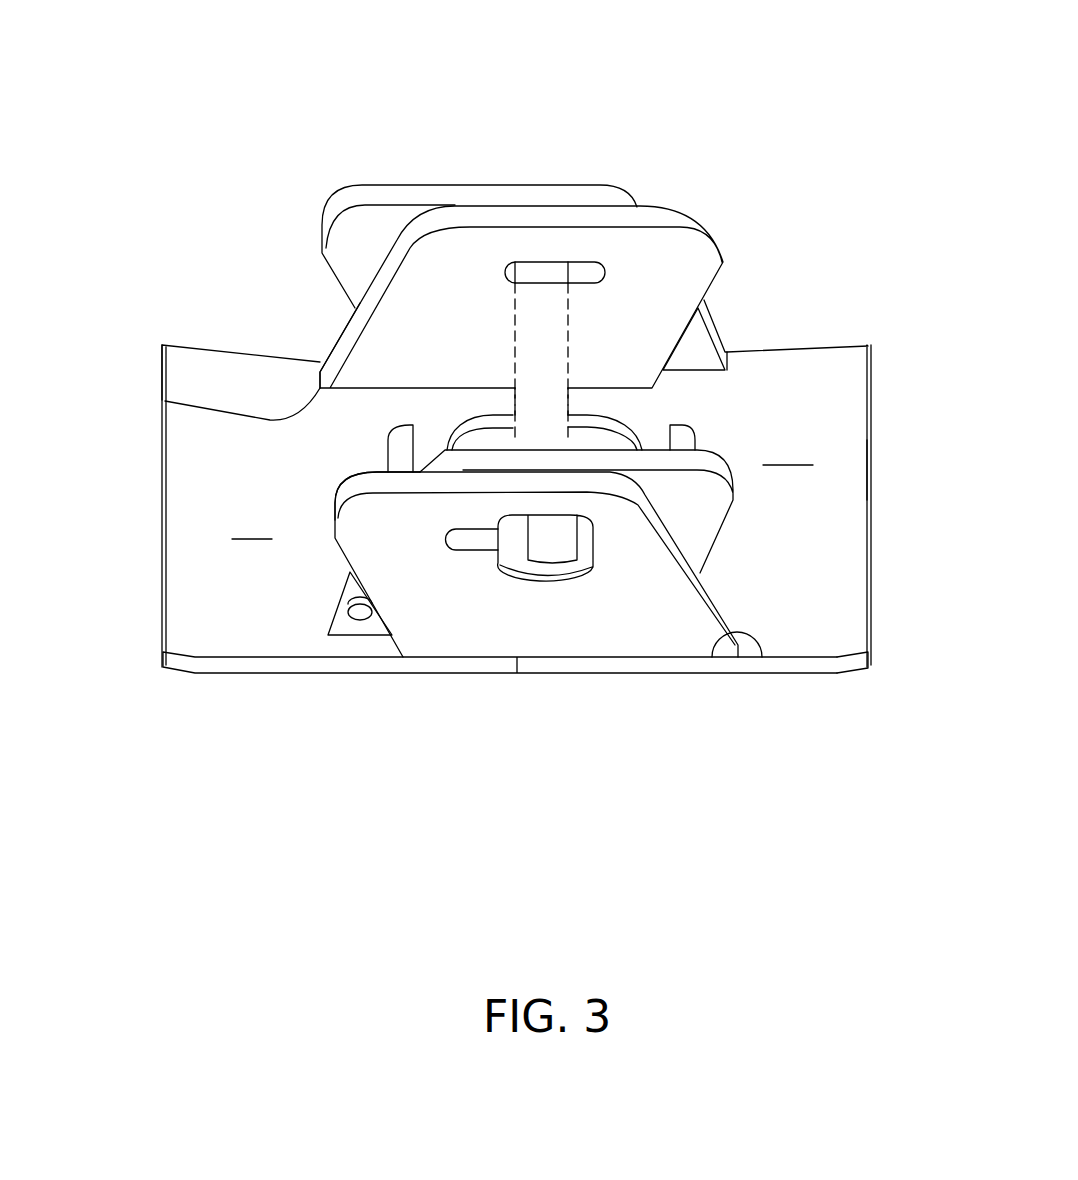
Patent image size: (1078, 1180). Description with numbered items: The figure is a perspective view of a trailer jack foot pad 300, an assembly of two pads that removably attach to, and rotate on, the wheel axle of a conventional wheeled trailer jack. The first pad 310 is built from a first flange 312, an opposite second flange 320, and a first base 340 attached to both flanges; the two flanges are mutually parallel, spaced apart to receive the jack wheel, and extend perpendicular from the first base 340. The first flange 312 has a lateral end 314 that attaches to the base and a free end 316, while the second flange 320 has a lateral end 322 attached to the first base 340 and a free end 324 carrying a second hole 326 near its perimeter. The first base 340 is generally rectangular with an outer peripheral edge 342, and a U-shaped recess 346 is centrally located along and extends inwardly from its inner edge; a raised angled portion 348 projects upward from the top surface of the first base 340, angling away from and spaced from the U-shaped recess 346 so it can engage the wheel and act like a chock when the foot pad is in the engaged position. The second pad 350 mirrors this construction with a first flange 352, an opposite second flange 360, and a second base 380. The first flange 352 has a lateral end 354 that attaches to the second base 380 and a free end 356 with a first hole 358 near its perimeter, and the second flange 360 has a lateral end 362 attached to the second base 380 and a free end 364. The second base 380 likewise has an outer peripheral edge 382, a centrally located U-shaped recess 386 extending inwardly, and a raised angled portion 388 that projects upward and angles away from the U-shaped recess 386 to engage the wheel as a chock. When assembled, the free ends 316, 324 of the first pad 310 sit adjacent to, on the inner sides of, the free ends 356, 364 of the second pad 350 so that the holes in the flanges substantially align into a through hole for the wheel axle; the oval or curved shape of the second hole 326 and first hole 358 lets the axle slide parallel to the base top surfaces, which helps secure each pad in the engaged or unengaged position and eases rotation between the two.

The trailer jack foot pad 300 is at (588, 103).
The first pad 310 is at (240, 665).
The first flange 312 is at (335, 612).
The lateral end 314 is at (355, 638).
The free end 316 is at (710, 512).
The second flange 320 is at (350, 322).
The lateral end 322 is at (165, 401).
The free end 324 is at (683, 265).
The second hole 326 is at (583, 275).
The first base 340 is at (241, 506).
The outer peripheral edge 342 is at (163, 368).
The U-shaped recess 346 is at (488, 438).
The raised angled portion 348 is at (398, 452).
The second pad 350 is at (808, 663).
The first flange 352 is at (642, 627).
The lateral end 354 is at (763, 657).
The free end 356 is at (350, 493).
The first hole 358 is at (477, 542).
The second flange 360 is at (693, 348).
The lateral end 362 is at (723, 348).
The free end 364 is at (357, 227).
The second base 380 is at (799, 506).
The outer peripheral edge 382 is at (873, 470).
The U-shaped recess 386 is at (590, 438).
The raised angled portion 388 is at (683, 433).